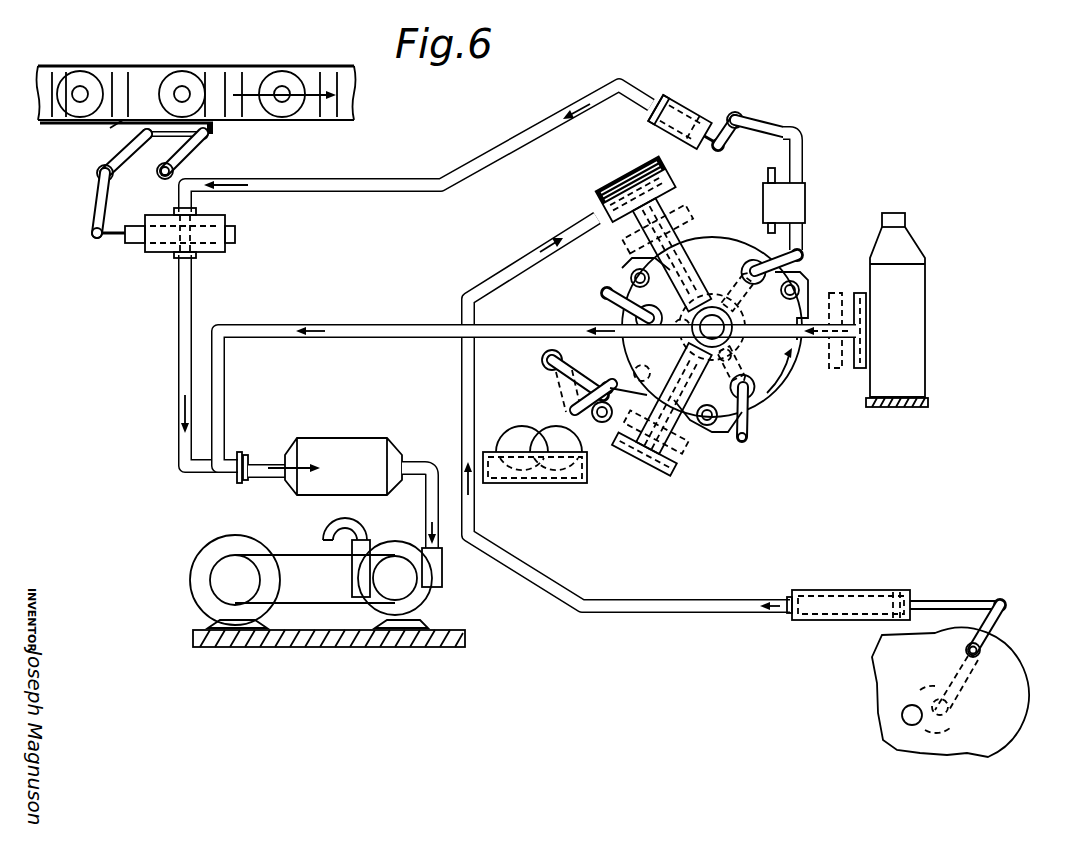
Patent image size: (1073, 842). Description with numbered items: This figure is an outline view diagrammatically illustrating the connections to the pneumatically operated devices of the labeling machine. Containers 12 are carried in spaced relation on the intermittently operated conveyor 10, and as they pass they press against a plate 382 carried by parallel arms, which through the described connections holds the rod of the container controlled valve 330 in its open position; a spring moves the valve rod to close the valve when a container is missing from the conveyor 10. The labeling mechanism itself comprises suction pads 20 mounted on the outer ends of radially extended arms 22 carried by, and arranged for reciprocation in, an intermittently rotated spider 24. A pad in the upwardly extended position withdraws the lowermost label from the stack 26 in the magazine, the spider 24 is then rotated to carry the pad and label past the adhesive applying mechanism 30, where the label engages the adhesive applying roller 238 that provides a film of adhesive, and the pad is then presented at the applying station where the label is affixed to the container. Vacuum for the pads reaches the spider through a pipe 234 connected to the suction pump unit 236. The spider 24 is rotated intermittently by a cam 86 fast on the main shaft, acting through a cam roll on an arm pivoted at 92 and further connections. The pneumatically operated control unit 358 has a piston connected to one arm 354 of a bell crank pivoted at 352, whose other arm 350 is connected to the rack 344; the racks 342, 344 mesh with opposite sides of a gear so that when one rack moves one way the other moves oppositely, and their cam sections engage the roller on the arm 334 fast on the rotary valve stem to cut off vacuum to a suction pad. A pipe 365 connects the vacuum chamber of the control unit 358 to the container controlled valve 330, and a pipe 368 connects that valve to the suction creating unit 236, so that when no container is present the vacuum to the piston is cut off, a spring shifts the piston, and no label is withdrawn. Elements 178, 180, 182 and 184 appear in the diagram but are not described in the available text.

The conveyor 10 is at (235, 74).
The container 12 is at (172, 80).
The suction pad 20 is at (688, 182).
The arm 22 is at (693, 238).
The spider 24 is at (770, 394).
The stack of labels 26 is at (618, 179).
The adhesive applying mechanism 30 is at (533, 427).
The cam 86 is at (990, 706).
The pivot 92 is at (982, 653).
The pipe 178 is at (523, 262).
The cylinder 180 is at (848, 590).
The lever 182 is at (985, 630).
The piston rod 184 is at (978, 580).
The pipe 234 is at (414, 323).
The suction pump unit 236 is at (203, 532).
The adhesive applying roller 238 is at (600, 440).
The container controlled valve 330 is at (163, 262).
The arm 334 is at (802, 250).
The rack 342 is at (790, 176).
The rack 344 is at (803, 150).
The bell crank arm 350 is at (764, 120).
The bell crank pivot 352 is at (743, 113).
The bell crank arm 354 is at (722, 125).
The pneumatically operated control unit 358 is at (700, 68).
The pipe 365 is at (540, 125).
The pipe 368 is at (180, 342).
The plate 382 is at (132, 125).